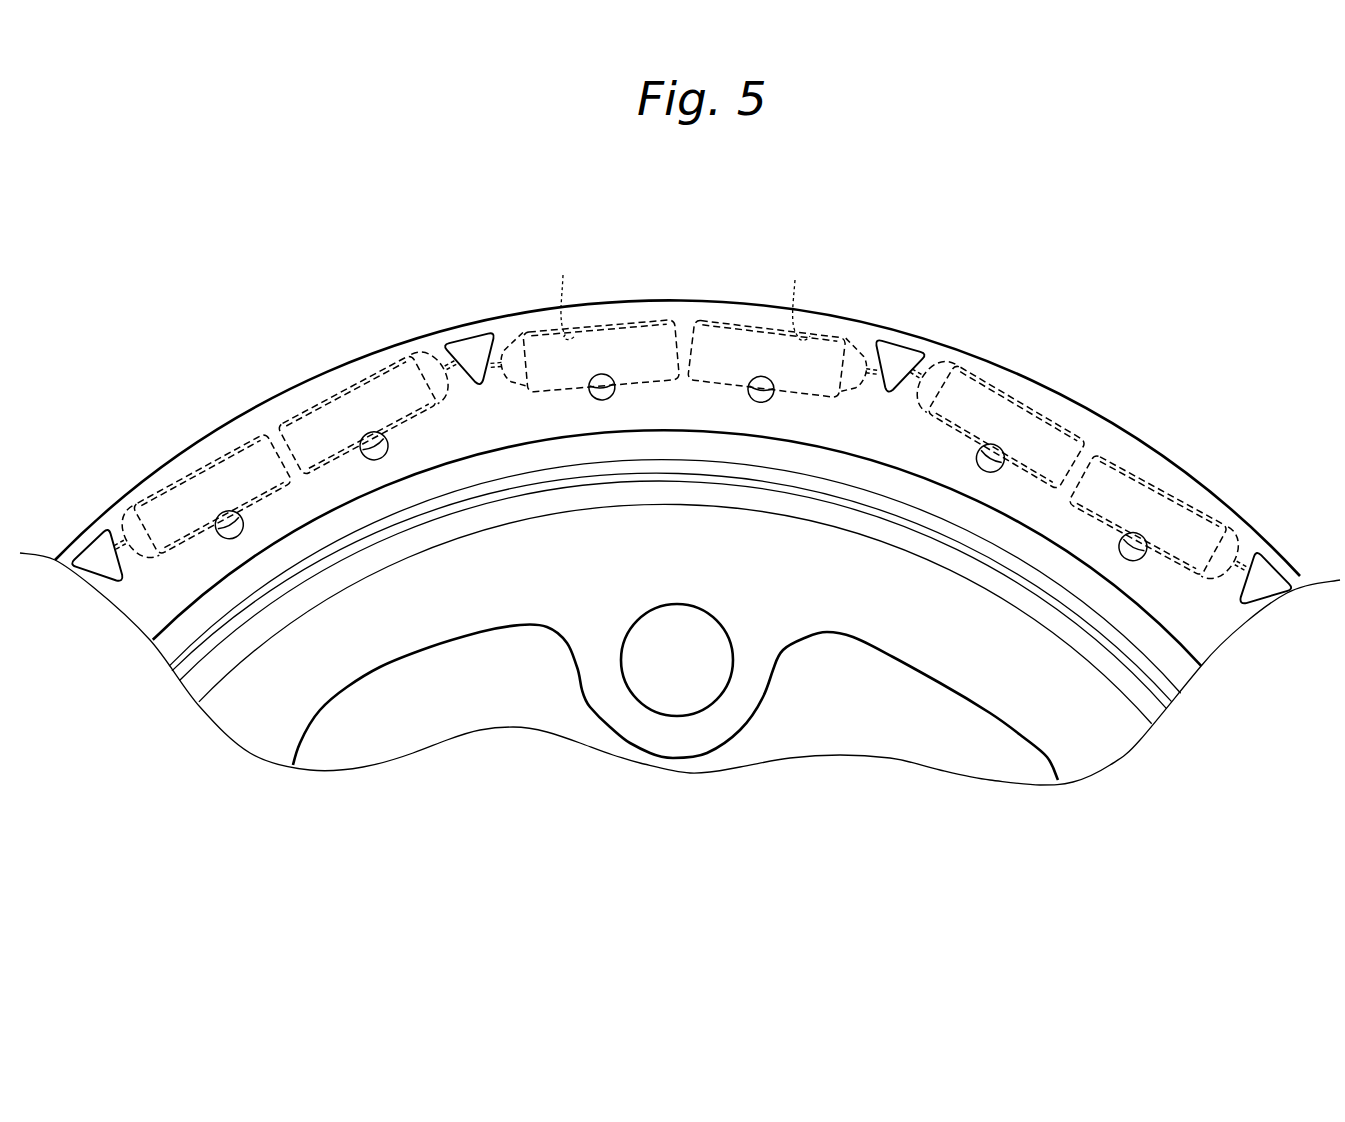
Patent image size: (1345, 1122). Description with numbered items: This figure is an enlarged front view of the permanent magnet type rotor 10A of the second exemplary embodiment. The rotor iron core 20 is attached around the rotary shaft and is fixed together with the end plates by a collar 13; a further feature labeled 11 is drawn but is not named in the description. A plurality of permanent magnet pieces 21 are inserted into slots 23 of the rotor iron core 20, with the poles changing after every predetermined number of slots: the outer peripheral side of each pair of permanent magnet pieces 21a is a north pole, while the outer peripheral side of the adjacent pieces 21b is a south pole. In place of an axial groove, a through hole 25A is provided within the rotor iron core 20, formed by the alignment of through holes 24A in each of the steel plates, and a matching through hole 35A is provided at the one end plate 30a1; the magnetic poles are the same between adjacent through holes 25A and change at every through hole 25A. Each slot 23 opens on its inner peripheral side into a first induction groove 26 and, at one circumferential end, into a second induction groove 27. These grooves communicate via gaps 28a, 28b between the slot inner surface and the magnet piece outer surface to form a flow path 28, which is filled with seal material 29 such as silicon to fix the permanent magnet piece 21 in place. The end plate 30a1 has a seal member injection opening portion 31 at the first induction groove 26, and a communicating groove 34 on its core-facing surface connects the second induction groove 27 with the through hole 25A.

The permanent magnet type rotor 10A is at (1076, 316).
The rotor core 11 is at (967, 755).
The collar 13 is at (295, 550).
The rotor iron core 20 is at (358, 364).
The permanent magnet pieces 21 is at (670, 407).
The permanent magnet pieces 21a is at (684, 400).
The permanent magnet pieces 21b is at (253, 460).
The slots 23 is at (679, 295).
The through holes 24A is at (682, 407).
The through hole 25A is at (468, 335).
The through hole 35A is at (682, 407).
The first induction groove 26 is at (600, 400).
The second induction groove 27 is at (512, 345).
The flow path 28 is at (755, 450).
The gap 28a is at (609, 448).
The gap 28b is at (497, 360).
The seal material 29 is at (1183, 577).
The one end plate 30a1 is at (1165, 478).
The seal member injection opening portion 31 is at (765, 405).
The communicating groove 34 is at (500, 360).